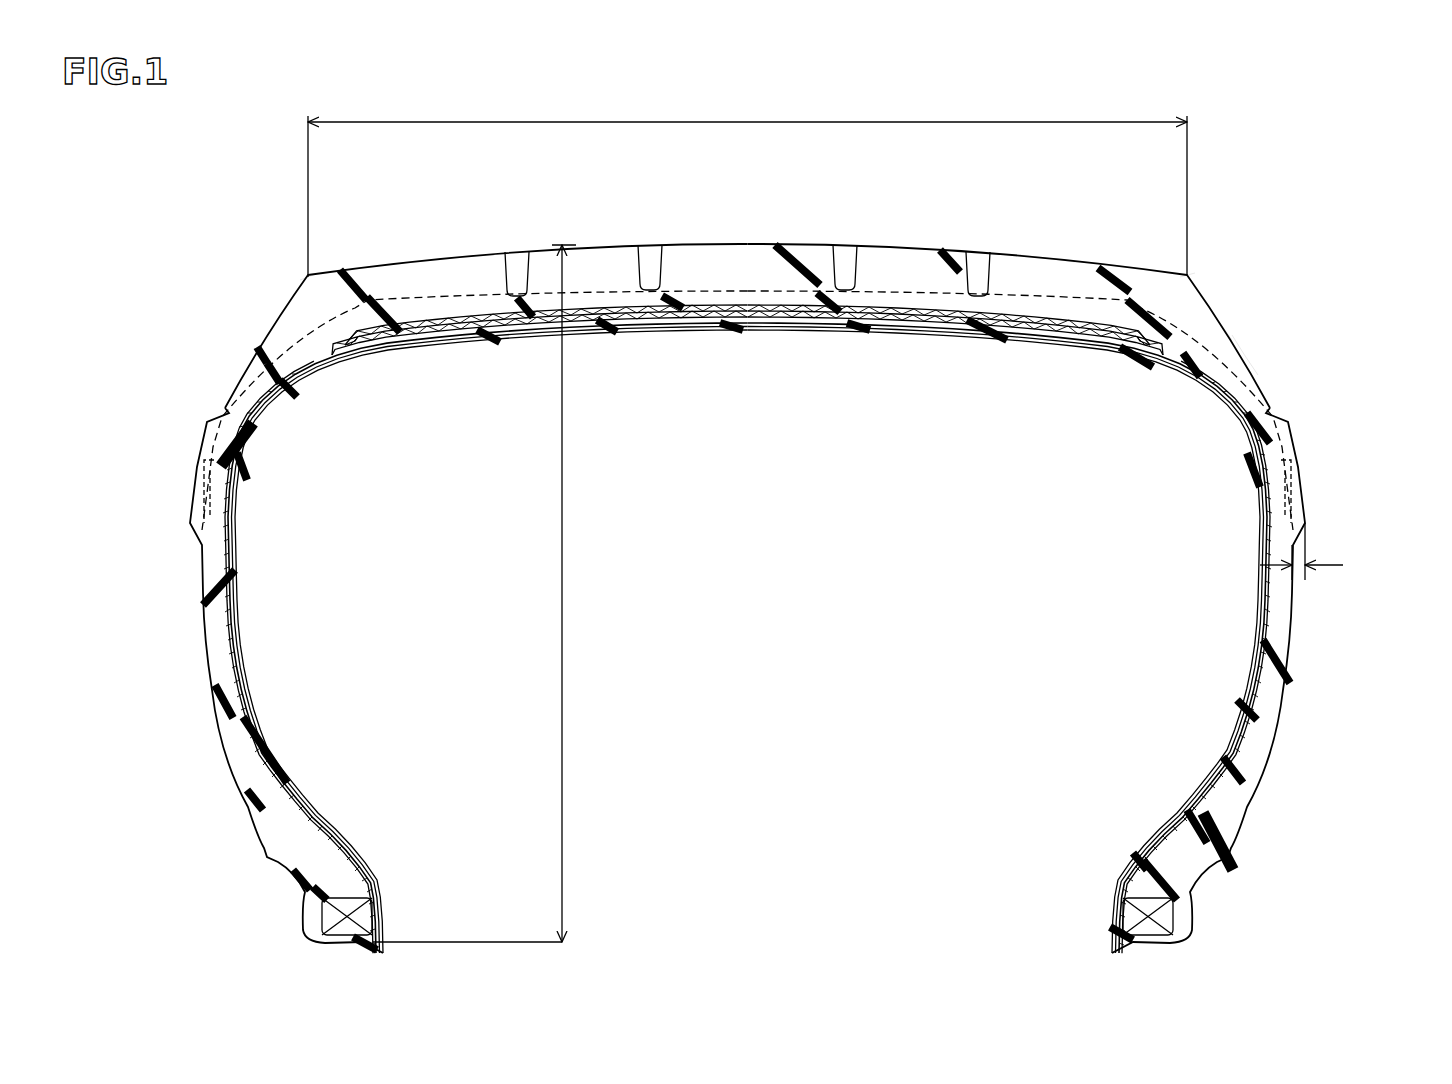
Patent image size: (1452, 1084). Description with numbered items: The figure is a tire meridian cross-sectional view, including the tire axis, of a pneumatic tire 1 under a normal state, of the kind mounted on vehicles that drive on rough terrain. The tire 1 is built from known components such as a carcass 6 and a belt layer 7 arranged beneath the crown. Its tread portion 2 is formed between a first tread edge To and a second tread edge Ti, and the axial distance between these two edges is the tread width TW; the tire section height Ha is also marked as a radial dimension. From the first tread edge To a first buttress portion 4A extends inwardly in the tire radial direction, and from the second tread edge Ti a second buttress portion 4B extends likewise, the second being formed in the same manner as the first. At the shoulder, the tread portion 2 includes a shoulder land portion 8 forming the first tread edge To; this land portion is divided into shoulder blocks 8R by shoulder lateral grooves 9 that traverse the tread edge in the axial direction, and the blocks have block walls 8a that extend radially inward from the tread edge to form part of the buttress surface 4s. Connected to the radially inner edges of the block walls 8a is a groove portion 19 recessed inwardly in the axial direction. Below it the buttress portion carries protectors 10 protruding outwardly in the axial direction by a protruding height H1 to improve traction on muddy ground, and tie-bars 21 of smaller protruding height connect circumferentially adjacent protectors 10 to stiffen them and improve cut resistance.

The pneumatic tire 1 is at (1213, 195).
The tread portion 2 is at (900, 232).
The first buttress portion 4A is at (1328, 395).
The second buttress portion 4B is at (205, 403).
The sidewall outer surface 4s is at (1240, 345).
The carcass 6 is at (1256, 504).
The belt layer 7 is at (903, 322).
The shoulder land portion 8 is at (1010, 247).
The shoulder blocks 8R is at (1042, 262).
The block walls 8a is at (1216, 318).
The shoulder lateral grooves 9 is at (1072, 290).
The protectors 10 is at (1305, 443).
The groove portion 19 is at (1272, 408).
The tie-bars 21 is at (1303, 479).
The tread width TW is at (747, 183).
The tire section height Ha is at (490, 593).
The protruding height H1 is at (1300, 568).
The second tread edge Ti is at (308, 277).
The first tread edge To is at (1190, 275).